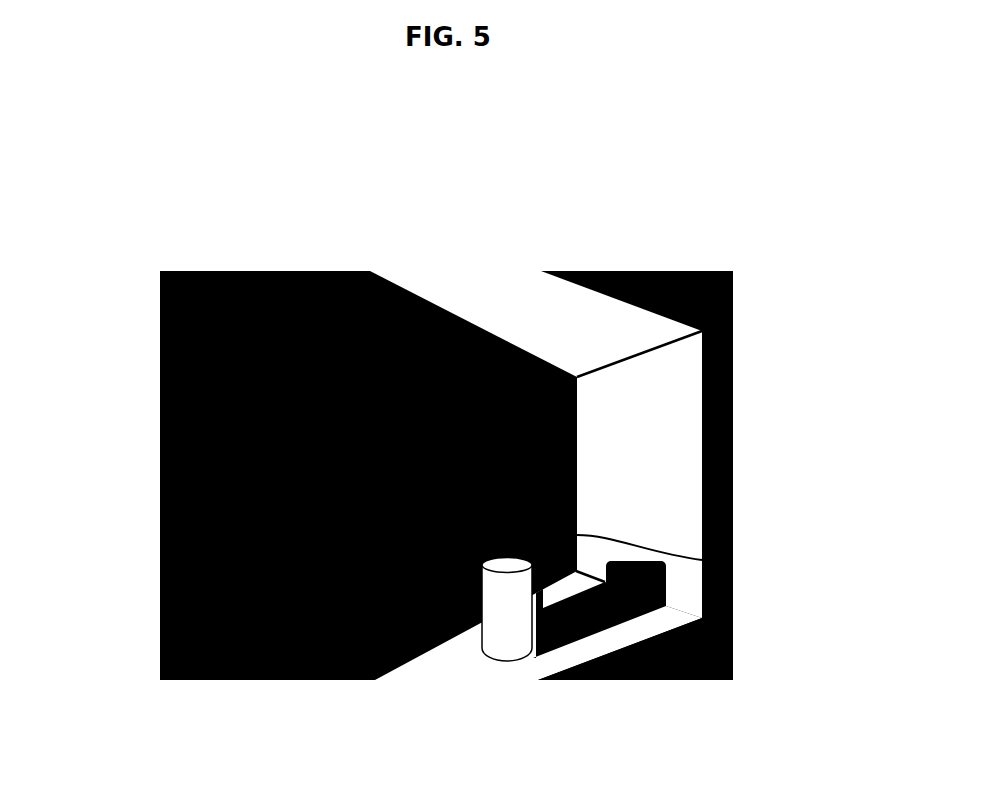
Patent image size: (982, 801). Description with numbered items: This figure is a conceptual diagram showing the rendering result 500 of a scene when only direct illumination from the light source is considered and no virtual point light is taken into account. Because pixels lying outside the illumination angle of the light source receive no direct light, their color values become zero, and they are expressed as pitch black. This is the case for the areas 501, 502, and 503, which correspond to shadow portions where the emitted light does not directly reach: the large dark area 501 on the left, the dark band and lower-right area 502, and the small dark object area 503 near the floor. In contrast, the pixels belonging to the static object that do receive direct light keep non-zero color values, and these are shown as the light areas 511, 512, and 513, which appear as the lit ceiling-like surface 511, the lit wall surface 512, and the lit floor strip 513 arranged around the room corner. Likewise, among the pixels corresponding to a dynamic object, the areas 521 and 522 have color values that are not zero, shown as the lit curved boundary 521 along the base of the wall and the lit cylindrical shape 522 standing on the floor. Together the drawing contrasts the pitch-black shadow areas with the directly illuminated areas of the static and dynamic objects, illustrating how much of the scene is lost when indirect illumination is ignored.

The rendering result 500 is at (405, 126).
The area 501 is at (152, 436).
The area 502 is at (725, 642).
The area 503 is at (658, 573).
The area 511 is at (475, 277).
The area 512 is at (665, 396).
The area 513 is at (432, 660).
The area 521 is at (694, 551).
The area 522 is at (488, 632).